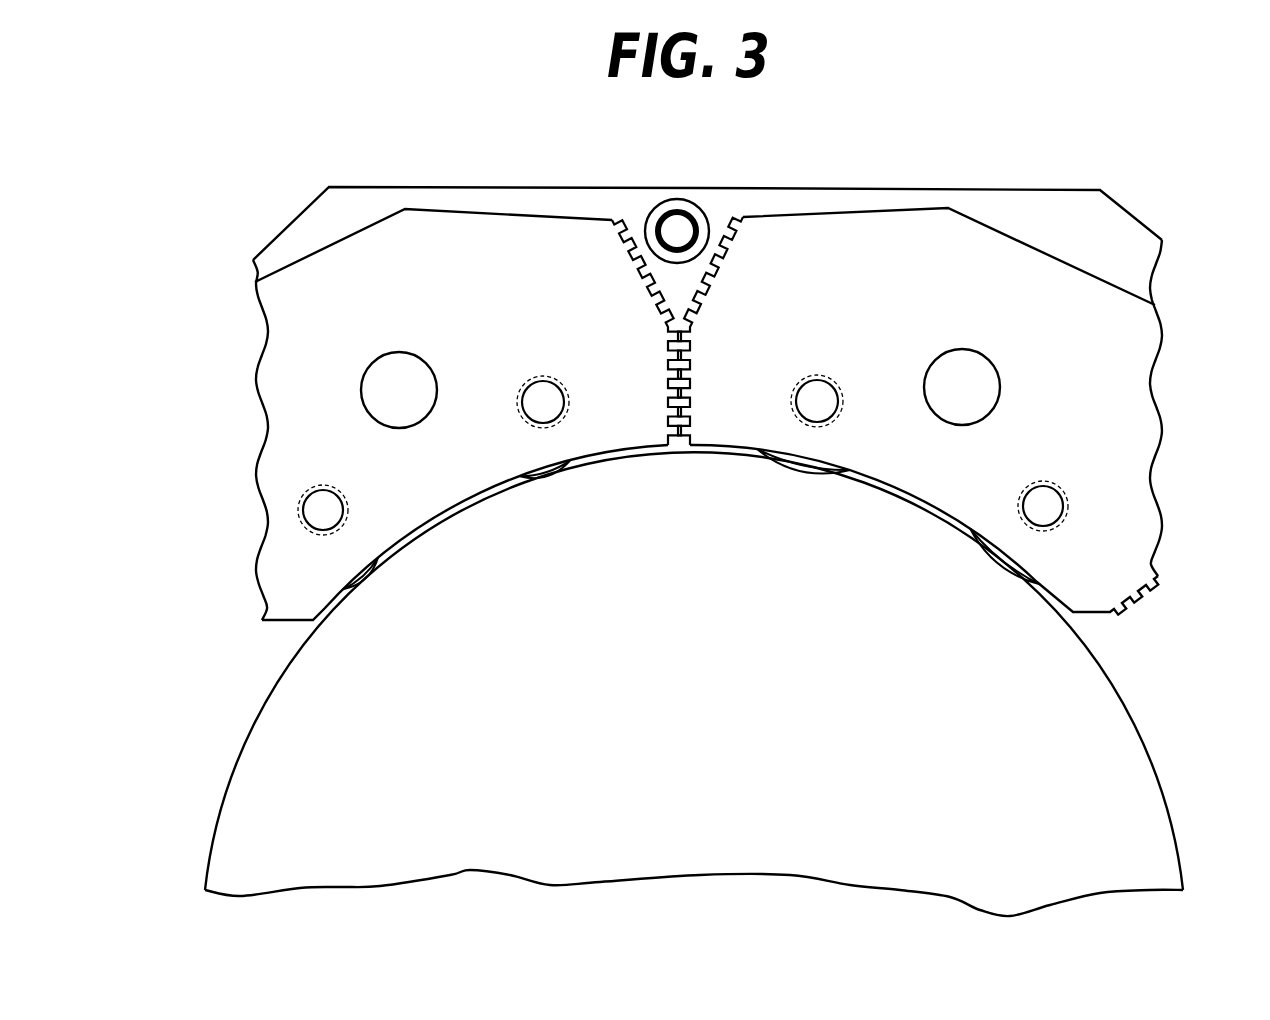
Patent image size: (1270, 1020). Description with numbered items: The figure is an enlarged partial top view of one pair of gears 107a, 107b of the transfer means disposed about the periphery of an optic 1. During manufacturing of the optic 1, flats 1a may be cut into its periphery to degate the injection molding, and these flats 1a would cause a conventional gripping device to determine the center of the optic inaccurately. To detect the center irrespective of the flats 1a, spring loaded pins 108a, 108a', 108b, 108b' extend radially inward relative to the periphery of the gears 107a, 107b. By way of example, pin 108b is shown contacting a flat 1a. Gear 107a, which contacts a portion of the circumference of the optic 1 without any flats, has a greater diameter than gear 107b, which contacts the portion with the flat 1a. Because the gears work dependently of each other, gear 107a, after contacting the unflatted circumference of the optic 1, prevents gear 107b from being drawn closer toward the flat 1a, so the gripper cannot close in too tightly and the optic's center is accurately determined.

The optic 1 is at (563, 833).
The flat 1a is at (876, 506).
The gear 107a is at (433, 278).
The gear 107b is at (927, 282).
The spring loaded pin 108a is at (256, 486).
The spring loaded pin 108a' is at (556, 282).
The spring loaded pin 108b is at (806, 282).
The spring loaded pin 108b' is at (1132, 472).